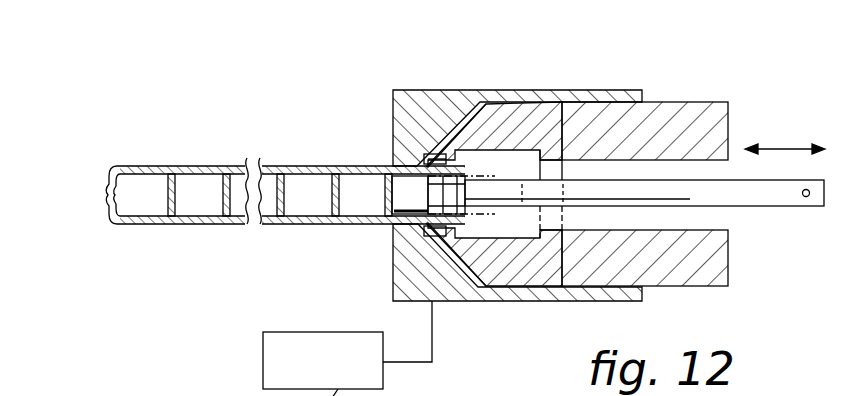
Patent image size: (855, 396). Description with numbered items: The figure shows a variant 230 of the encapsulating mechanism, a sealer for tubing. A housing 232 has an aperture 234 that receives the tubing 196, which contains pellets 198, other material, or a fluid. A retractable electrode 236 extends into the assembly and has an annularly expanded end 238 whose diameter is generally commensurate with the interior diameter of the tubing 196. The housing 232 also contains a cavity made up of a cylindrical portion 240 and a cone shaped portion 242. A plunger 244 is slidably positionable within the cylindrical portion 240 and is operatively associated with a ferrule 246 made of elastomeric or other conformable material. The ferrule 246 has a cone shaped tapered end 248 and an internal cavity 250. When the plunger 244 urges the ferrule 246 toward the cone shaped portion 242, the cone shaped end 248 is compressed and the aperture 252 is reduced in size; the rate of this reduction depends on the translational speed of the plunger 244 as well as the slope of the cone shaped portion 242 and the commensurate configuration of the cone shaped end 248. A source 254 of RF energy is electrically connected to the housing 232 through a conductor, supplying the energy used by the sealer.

The tubing 196 is at (200, 228).
The pellets 198 is at (307, 192).
The variant of encapsulating mechanism 230 is at (788, 353).
The housing 232 is at (420, 276).
The aperture 234 is at (375, 226).
The retractable electrode 236 is at (778, 207).
The annularly expanded end 238 is at (402, 142).
The cylindrical portion 240 is at (540, 283).
The cone shaped portion 242 is at (480, 272).
The plunger 244 is at (722, 262).
The ferrule 246 is at (596, 100).
The cone shaped tapered end 248 is at (428, 152).
The internal cavity 250 is at (513, 148).
The aperture 252 is at (425, 150).
The source of RF energy 254 is at (446, 362).